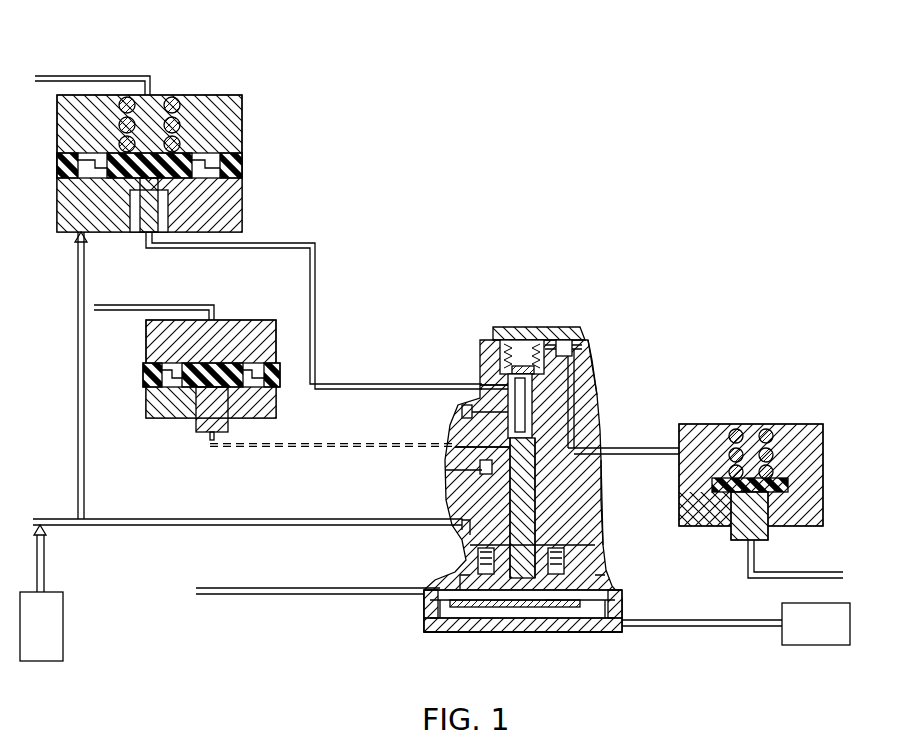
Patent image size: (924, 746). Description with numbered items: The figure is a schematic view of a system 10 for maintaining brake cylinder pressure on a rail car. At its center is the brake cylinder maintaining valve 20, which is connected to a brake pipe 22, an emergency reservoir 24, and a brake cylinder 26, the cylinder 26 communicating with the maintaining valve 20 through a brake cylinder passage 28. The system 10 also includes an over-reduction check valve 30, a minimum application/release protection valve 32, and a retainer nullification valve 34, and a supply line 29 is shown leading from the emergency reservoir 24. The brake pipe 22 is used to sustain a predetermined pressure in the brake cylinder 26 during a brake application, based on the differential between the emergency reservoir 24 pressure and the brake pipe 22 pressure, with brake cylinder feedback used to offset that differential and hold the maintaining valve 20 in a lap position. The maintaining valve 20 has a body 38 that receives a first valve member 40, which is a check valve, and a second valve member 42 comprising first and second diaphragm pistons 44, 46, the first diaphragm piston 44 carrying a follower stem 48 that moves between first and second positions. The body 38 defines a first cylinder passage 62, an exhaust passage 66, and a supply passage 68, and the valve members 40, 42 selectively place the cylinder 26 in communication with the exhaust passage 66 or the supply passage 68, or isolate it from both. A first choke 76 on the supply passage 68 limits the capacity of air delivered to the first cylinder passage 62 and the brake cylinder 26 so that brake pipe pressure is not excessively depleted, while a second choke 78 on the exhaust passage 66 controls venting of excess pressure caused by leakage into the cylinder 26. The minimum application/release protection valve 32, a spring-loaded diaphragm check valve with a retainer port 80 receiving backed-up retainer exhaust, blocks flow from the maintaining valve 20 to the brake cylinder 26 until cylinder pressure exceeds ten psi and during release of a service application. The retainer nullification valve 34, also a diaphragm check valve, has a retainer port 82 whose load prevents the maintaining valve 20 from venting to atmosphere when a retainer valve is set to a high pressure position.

The system 10 is at (648, 236).
The brake cylinder maintaining valve 20 is at (572, 326).
The brake pipe 22 is at (362, 596).
The emergency reservoir 24 is at (828, 646).
The brake cylinder 26 is at (65, 632).
The brake cylinder passage 28 is at (85, 490).
The supply line 29 is at (692, 627).
The over-reduction check valve 30 is at (710, 424).
The minimum application/release protection valve 32 is at (242, 152).
The retainer nullification valve 34 is at (245, 320).
The body 38 is at (592, 372).
The first valve member 40 is at (505, 328).
The second valve member 42 is at (548, 510).
The first diaphragm piston 44 is at (548, 600).
The second diaphragm piston 46 is at (490, 632).
The follower stem 48 is at (512, 494).
The first cylinder passage 62 is at (318, 382).
The exhaust passage 66 is at (302, 445).
The supply passage 68 is at (478, 437).
The first choke 76 is at (476, 398).
The second choke 78 is at (480, 468).
The retainer port 80 is at (148, 76).
The retainer port 82 is at (136, 311).